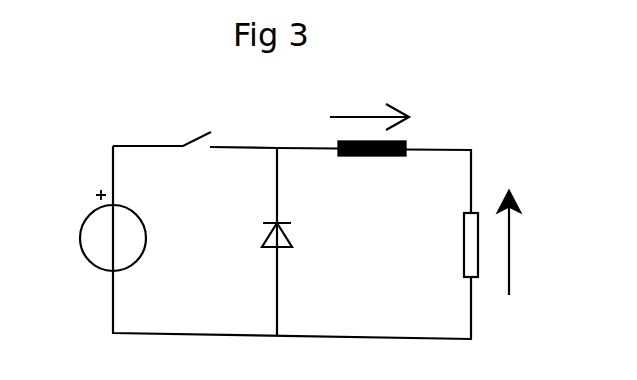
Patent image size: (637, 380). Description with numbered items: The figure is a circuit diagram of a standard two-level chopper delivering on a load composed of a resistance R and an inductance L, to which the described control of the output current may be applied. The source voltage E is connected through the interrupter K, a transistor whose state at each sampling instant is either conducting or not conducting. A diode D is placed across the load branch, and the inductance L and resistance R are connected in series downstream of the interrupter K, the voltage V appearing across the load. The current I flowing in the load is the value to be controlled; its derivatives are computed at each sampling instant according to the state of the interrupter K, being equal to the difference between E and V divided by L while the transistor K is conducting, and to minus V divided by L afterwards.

The interrupter K is at (162, 153).
The source voltage E is at (102, 230).
The diode D is at (269, 246).
The inductance L is at (372, 163).
The resistance R is at (456, 245).
The current I is at (369, 110).
The load voltage V is at (512, 242).